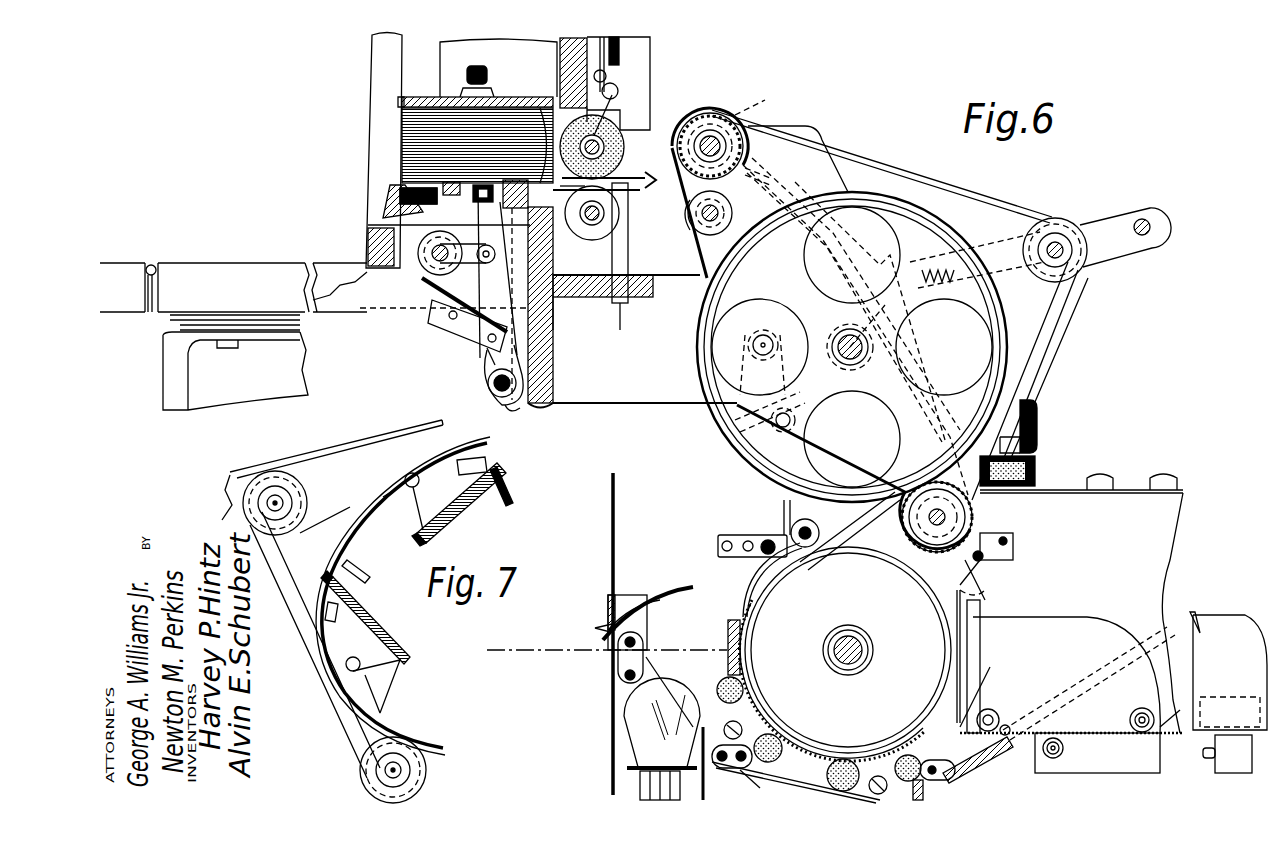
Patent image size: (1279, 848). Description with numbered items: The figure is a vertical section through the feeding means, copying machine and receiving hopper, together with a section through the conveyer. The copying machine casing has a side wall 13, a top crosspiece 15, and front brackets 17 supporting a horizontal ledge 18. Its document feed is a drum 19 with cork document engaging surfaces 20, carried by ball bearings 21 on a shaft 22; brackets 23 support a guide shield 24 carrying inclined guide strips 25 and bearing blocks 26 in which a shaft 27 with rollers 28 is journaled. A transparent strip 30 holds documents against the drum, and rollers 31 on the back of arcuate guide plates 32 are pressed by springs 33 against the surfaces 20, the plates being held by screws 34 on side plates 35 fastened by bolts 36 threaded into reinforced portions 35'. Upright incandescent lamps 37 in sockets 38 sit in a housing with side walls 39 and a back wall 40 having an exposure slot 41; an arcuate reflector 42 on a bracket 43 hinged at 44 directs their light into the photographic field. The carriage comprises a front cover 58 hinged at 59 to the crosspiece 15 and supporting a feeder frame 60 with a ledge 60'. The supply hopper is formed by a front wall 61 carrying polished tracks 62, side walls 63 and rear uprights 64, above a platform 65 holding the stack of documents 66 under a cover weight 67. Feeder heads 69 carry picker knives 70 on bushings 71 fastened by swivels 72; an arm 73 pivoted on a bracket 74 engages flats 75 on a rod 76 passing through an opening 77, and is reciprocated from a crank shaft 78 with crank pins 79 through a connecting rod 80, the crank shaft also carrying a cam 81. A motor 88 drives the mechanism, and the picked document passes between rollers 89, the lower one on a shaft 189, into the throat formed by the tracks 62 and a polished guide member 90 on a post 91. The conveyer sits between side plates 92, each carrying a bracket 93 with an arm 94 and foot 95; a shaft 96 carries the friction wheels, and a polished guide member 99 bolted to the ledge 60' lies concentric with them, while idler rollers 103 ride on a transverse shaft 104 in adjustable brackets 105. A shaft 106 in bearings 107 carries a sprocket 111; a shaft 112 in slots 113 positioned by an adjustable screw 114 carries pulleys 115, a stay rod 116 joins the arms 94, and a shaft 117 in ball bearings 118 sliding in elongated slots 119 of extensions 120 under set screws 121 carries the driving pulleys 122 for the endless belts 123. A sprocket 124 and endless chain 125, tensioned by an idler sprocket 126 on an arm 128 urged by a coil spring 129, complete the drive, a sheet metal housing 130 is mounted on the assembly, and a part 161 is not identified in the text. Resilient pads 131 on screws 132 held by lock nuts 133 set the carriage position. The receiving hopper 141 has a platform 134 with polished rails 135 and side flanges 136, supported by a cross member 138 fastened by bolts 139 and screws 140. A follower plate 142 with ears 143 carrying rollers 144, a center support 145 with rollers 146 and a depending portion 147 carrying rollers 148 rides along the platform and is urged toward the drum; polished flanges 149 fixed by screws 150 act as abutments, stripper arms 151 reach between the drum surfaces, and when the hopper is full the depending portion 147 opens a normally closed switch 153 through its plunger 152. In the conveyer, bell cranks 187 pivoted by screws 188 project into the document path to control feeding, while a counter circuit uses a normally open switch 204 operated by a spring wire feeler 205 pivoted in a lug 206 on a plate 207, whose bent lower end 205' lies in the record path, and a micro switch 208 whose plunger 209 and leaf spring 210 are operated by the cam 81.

In FIG. 6, the side wall 13 is at (838, 477).
In FIG. 6, the top crosspiece 15 is at (112, 262).
In FIG. 6, the brackets 17 is at (1055, 690).
In FIG. 6, the horizontal ledge 18 is at (1122, 488).
In FIG. 6, the drum 19 is at (845, 553).
In FIG. 6, the document engaging surfaces 20 is at (885, 552).
In FIG. 6, the ball bearings 21 is at (835, 640).
In FIG. 6, the shaft 22 is at (866, 640).
In FIG. 6, the brackets 23 is at (725, 540).
In FIG. 6, the guide shield 24 is at (748, 580).
In FIG. 6, the guide strips 25 is at (845, 530).
In FIG. 6, the bearing blocks 26 is at (795, 522).
In FIG. 6, the shaft 27 is at (807, 528).
In FIG. 6, the rollers 28 is at (766, 538).
In FIG. 6, the transparent strip 30 is at (728, 630).
In FIG. 6, the rollers 31 is at (755, 700).
In FIG. 6, the arcuate guide plates 32 is at (846, 758).
In FIG. 6, the springs 33 is at (790, 740).
In FIG. 6, the screws 34 is at (886, 792).
In FIG. 6, the side plates 35 is at (796, 782).
In FIG. 6, the reinforced portions 35' is at (750, 787).
In FIG. 6, the bolts 36 is at (722, 768).
In FIG. 6, the incandescent lamps 37 is at (630, 720).
In FIG. 6, the sockets 38 is at (640, 778).
In FIG. 6, the side walls 39 is at (646, 652).
In FIG. 6, the back wall 40 is at (613, 683).
In FIG. 6, the exposure slot 41 is at (613, 657).
In FIG. 6, the arcuate reflector 42 is at (655, 583).
In FIG. 6, the bracket 43 is at (622, 598).
In FIG. 6, the hinge 44 is at (595, 626).
In FIG. 6, the front cover 58 is at (268, 263).
In FIG. 6, the hinge 59 is at (152, 262).
In FIG. 6, the feeder frame 60 is at (548, 299).
In FIG. 6, the ledge 60' is at (641, 320).
In FIG. 6, the front wall 61 is at (612, 82).
In FIG. 6, the polished tracks 62 is at (560, 62).
In FIG. 6, the side walls 63 is at (498, 68).
In FIG. 6, the rear uprights 64 is at (376, 55).
In FIG. 6, the document supporting platform 65 is at (540, 97).
In FIG. 6, the documents 66 is at (400, 140).
In FIG. 7, the documents 66 is at (405, 460).
In FIG. 6, the cover weight 67 is at (400, 100).
In FIG. 6, the feeder heads 69 is at (530, 190).
In FIG. 6, the knife 70 is at (390, 195).
In FIG. 6, the bushing 71 is at (449, 244).
In FIG. 6, the swivel 72 is at (418, 205).
In FIG. 6, the arm 73 is at (486, 362).
In FIG. 6, the bracket 74 is at (508, 406).
In FIG. 6, the flats 75 is at (465, 204).
In FIG. 6, the rod 76 is at (488, 273).
In FIG. 6, the opening 77 is at (511, 278).
In FIG. 6, the crank shaft 78 is at (432, 252).
In FIG. 6, the crank pins 79 is at (372, 276).
In FIG. 6, the connecting rod 80 is at (486, 262).
In FIG. 6, the cam 81 is at (440, 290).
In FIG. 6, the motor 88 is at (305, 362).
In FIG. 6, the rollers 89 is at (624, 150).
In FIG. 6, the polished guide member 90 is at (640, 184).
In FIG. 6, the post 91 is at (628, 226).
In FIG. 6, the side plates 92 is at (786, 126).
In FIG. 6, the bracket 93 is at (1006, 310).
In FIG. 6, the arm 94 is at (1108, 222).
In FIG. 7, the arm 94 is at (328, 495).
In FIG. 6, the foot 95 is at (1003, 360).
In FIG. 6, the shaft 96 is at (880, 306).
In FIG. 6, the polished guide member 99 is at (755, 236).
In FIG. 6, the idler rollers 103 is at (720, 212).
In FIG. 6, the transverse shaft 104 is at (718, 205).
In FIG. 6, the adjustable brackets 105 is at (690, 248).
In FIG. 6, the shaft 106 is at (705, 130).
In FIG. 6, the bearings 107 is at (745, 158).
In FIG. 6, the sprocket 111 is at (756, 93).
In FIG. 6, the shaft 112 is at (1050, 245).
In FIG. 7, the shaft 112 is at (268, 502).
In FIG. 6, the slots 113 is at (1062, 225).
In FIG. 6, the adjustable screw 114 is at (980, 245).
In FIG. 6, the pulleys 115 is at (1075, 285).
In FIG. 7, the pulleys 115 is at (268, 472).
In FIG. 6, the stay rod 116 is at (1142, 218).
In FIG. 6, the shaft 117 is at (975, 512).
In FIG. 7, the shaft 117 is at (385, 772).
In FIG. 6, the ball bearings 118 is at (1013, 540).
In FIG. 6, the elongated slots 119 is at (975, 503).
In FIG. 6, the extensions 120 is at (985, 590).
In FIG. 6, the set screws 121 is at (990, 578).
In FIG. 7, the pulleys 122 is at (427, 770).
In FIG. 6, the endless belts 123 is at (897, 172).
In FIG. 7, the endless belts 123 is at (348, 448).
In FIG. 6, the sprocket 124 is at (860, 420).
In FIG. 6, the endless chain 125 is at (775, 178).
In FIG. 6, the idler sprocket 126 is at (795, 382).
In FIG. 6, the arm 128 is at (840, 340).
In FIG. 6, the coil spring 129 is at (770, 330).
In FIG. 6, the sheet metal housing 130 is at (710, 125).
In FIG. 6, the resilient pads 131 is at (1035, 470).
In FIG. 6, the screws 132 is at (1037, 432).
In FIG. 6, the lock nuts 133 is at (1037, 408).
In FIG. 6, the platform 134 is at (1080, 740).
In FIG. 6, the polished rails 135 is at (1175, 718).
In FIG. 6, the side flanges 136 is at (1168, 518).
In FIG. 6, the cross member 138 is at (985, 758).
In FIG. 6, the bolts 139 is at (940, 775).
In FIG. 6, the screws 140 is at (1007, 724).
In FIG. 6, the hopper 141 is at (1235, 618).
In FIG. 6, the follower plate 142 is at (989, 664).
In FIG. 6, the ears 143 is at (985, 689).
In FIG. 6, the rollers 144 is at (993, 708).
In FIG. 6, the center support 145 is at (1087, 617).
In FIG. 6, the rollers 146 is at (1138, 708).
In FIG. 6, the depending portion 147 is at (1125, 765).
In FIG. 6, the rollers 148 is at (1050, 760).
In FIG. 6, the polished flanges 149 is at (1010, 544).
In FIG. 6, the screws 150 is at (1013, 558).
In FIG. 6, the stripper arms 151 is at (955, 620).
In FIG. 6, the plunger 152 is at (1205, 758).
In FIG. 6, the switch 153 is at (1232, 735).
In FIG. 7, the bar 161 is at (440, 520).
In FIG. 7, the bell cranks 187 is at (385, 508).
In FIG. 7, the screws 188 is at (419, 480).
In FIG. 6, the shaft 189 is at (592, 226).
In FIG. 6, the normally open switch 204 is at (622, 42).
In FIG. 6, the spring wire feeler 205 is at (641, 94).
In FIG. 6, the lower end 205' is at (581, 196).
In FIG. 6, the lug 206 is at (606, 78).
In FIG. 6, the plate 207 is at (600, 37).
In FIG. 6, the micro switch 208 is at (470, 340).
In FIG. 6, the plunger 209 is at (448, 318).
In FIG. 6, the leaf spring 210 is at (470, 330).